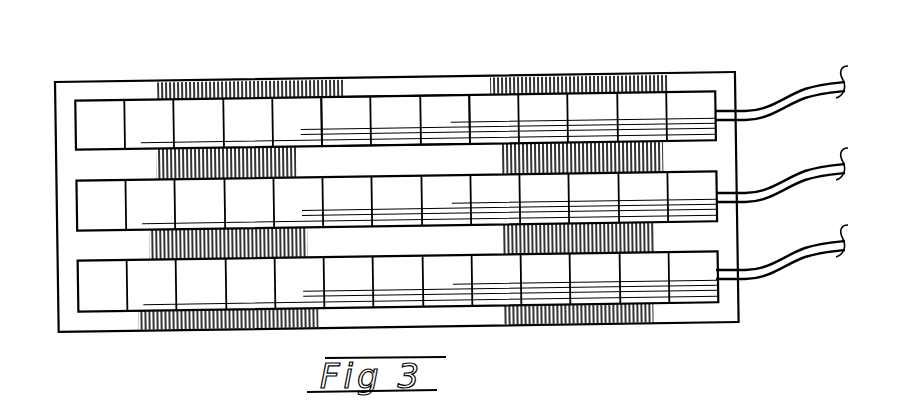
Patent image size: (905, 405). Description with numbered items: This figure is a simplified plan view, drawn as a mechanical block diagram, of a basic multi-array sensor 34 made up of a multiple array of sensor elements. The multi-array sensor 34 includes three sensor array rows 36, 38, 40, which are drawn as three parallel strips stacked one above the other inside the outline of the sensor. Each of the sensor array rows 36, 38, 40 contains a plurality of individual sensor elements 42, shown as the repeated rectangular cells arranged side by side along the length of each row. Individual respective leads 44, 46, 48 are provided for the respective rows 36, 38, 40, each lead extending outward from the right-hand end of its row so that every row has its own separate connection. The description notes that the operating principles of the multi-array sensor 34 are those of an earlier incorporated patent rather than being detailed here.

The multi-array sensor 34 is at (228, 334).
The sensor array row 36 is at (52, 120).
The sensor array row 38 is at (52, 213).
The sensor array row 40 is at (52, 294).
The individual sensor elements 42 is at (348, 96).
The lead 44 is at (793, 97).
The lead 46 is at (780, 187).
The lead 48 is at (784, 265).